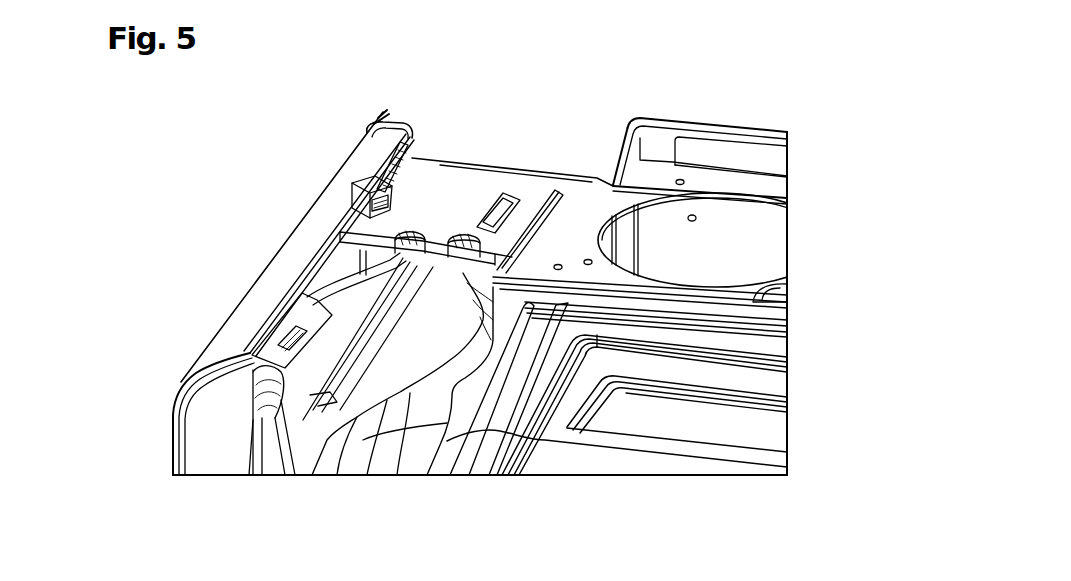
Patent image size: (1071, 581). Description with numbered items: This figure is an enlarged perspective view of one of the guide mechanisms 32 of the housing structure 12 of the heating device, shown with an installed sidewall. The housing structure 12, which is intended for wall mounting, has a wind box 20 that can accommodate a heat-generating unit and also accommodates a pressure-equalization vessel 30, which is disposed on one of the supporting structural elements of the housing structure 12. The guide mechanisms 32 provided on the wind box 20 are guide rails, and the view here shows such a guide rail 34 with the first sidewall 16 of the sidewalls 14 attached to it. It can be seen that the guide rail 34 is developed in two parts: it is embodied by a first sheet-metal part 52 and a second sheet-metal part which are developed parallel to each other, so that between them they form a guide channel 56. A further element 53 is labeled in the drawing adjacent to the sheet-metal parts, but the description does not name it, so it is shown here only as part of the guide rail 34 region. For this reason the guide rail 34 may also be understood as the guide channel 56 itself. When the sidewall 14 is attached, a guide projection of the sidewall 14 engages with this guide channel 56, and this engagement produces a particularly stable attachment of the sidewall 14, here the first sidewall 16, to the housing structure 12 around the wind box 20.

The housing structure 12 is at (502, 296).
The sidewalls 14 is at (259, 292).
The first sidewall 16 is at (198, 423).
The wind box 20 is at (688, 452).
The pressure-equalization vessel 30 is at (297, 453).
The guide mechanisms 32 is at (453, 131).
The guide rail 34 is at (453, 131).
The guide channel 56 is at (415, 148).
The first sheet-metal part 52 is at (407, 142).
The sensor bracket 53 is at (423, 200).